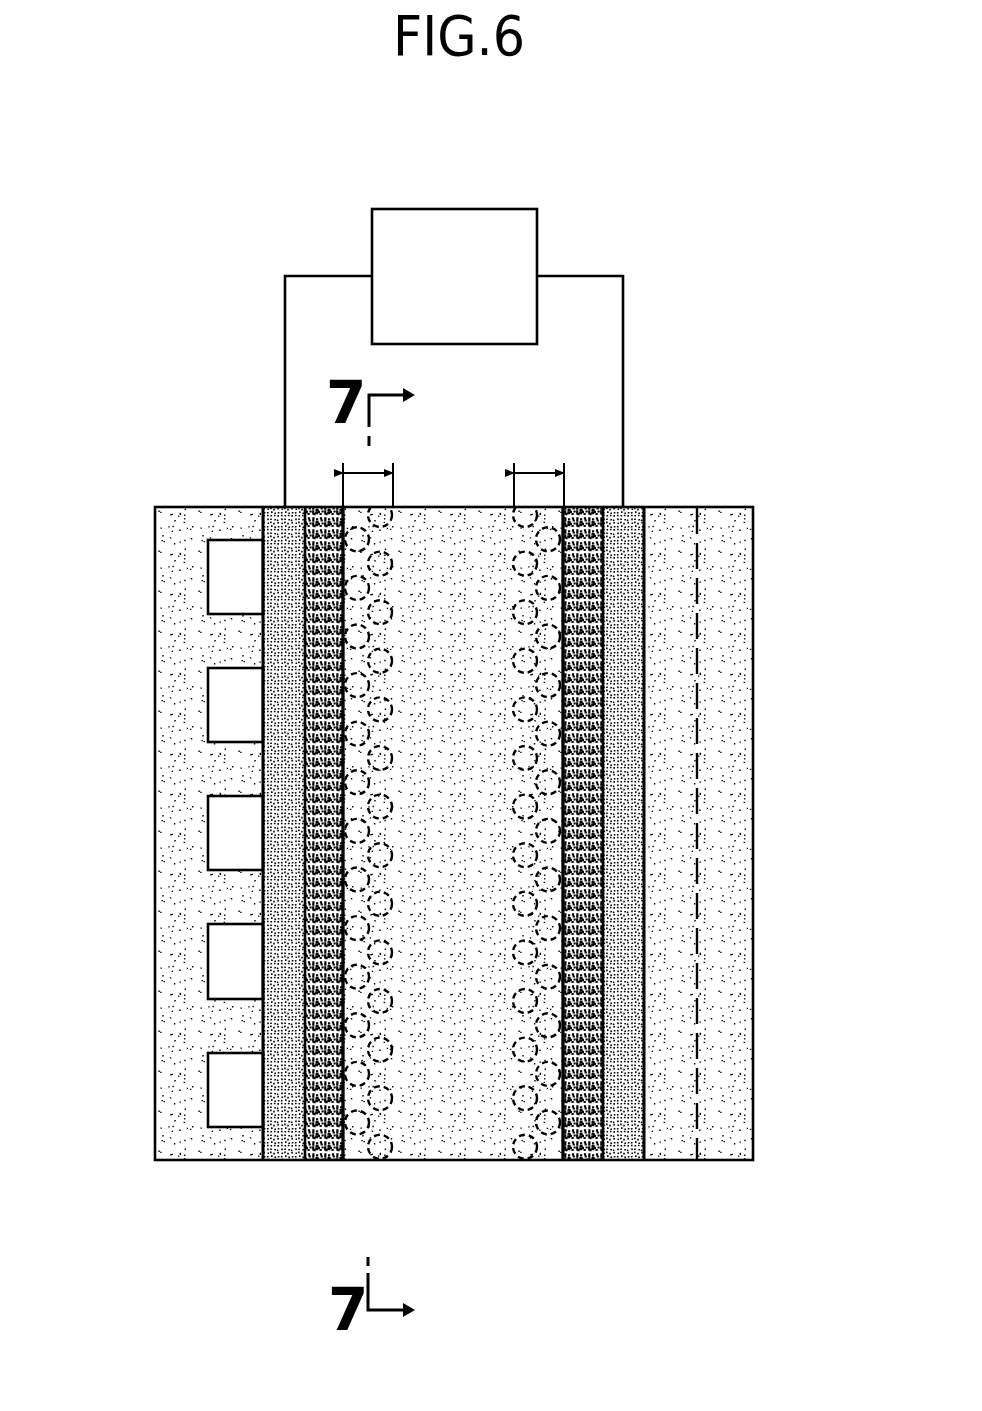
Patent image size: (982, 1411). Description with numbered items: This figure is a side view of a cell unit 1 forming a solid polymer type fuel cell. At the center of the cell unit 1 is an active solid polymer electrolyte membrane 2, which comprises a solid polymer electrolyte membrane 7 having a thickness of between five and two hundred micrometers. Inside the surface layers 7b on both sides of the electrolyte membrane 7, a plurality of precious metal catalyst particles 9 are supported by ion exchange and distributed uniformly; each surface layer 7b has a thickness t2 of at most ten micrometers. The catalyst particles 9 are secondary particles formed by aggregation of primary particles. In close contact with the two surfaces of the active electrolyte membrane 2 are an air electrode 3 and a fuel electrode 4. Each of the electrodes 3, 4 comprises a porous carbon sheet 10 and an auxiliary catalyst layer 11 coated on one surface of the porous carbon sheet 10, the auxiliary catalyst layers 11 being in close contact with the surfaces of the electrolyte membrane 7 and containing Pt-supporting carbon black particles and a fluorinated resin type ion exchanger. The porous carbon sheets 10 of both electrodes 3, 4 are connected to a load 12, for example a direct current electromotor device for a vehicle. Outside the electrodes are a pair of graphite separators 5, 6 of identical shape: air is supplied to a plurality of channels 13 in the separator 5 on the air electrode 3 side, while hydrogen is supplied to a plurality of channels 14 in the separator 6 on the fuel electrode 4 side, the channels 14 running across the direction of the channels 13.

The cell unit 1 is at (690, 490).
The active solid polymer electrolyte membrane 2 is at (533, 1236).
The air electrode 3 is at (325, 1236).
The fuel electrode 4 is at (707, 1236).
The separator 5 is at (178, 927).
The separator 6 is at (722, 840).
The solid polymer electrolyte membrane 7 is at (457, 1150).
The surface layer 7b is at (337, 753).
The precious metal catalyst particles 9 is at (375, 518).
The porous carbon sheet 10 is at (280, 1148).
The auxiliary catalyst layer 11 is at (326, 1157).
The load 12 is at (451, 238).
The channels 13 is at (222, 573).
The channels 14 is at (697, 940).
The thickness of the surface layers t2 is at (373, 472).